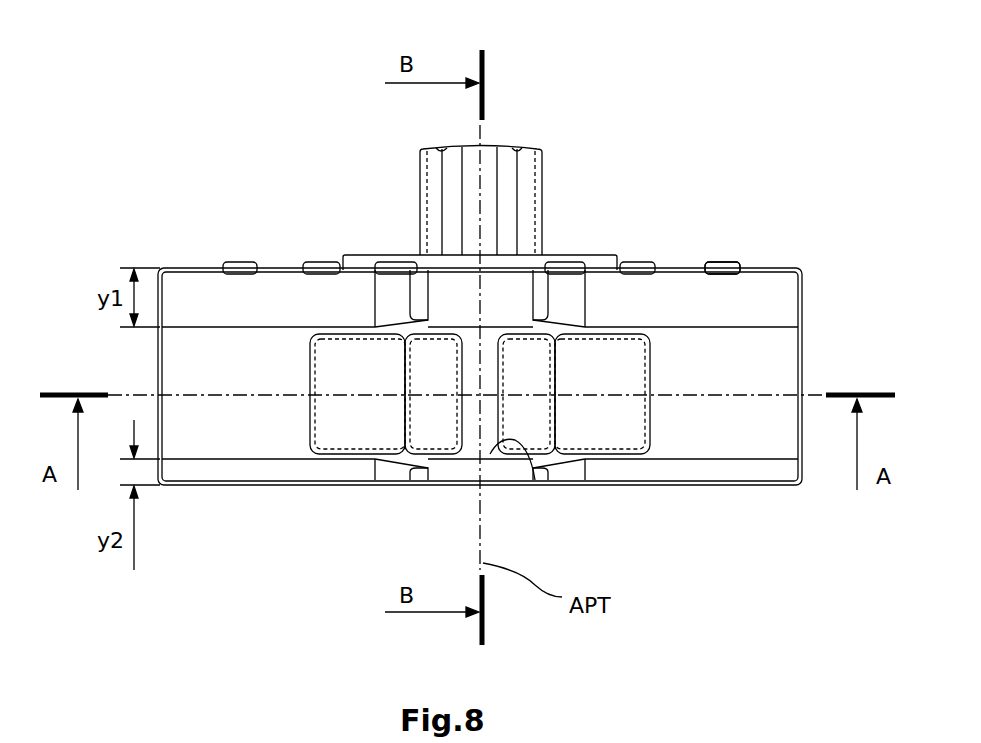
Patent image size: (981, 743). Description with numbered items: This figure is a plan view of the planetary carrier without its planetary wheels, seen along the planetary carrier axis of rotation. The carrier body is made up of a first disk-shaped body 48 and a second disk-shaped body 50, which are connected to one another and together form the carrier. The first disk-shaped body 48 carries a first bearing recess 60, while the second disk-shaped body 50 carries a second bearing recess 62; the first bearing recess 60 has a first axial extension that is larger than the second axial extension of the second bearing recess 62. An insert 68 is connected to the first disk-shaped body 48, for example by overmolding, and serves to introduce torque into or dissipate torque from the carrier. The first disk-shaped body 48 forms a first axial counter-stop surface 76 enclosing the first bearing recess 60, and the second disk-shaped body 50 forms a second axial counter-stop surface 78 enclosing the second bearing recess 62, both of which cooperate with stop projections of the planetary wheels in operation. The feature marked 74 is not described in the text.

The first disk-shaped body 48 is at (190, 284).
The second disk-shaped body 50 is at (252, 487).
The first bearing recess 60 is at (443, 283).
The second bearing recess 62 is at (455, 472).
The insert 68 is at (532, 206).
The protrusion 74 is at (722, 262).
The first axial counter-stop surface 76 is at (492, 334).
The second axial counter-stop surface 78 is at (535, 480).